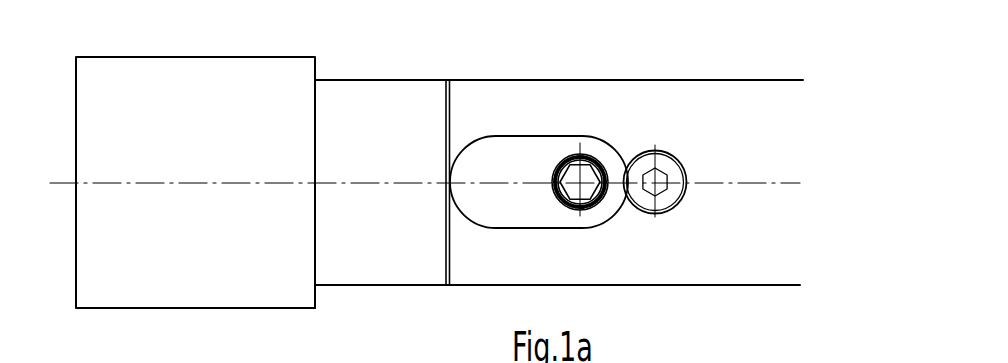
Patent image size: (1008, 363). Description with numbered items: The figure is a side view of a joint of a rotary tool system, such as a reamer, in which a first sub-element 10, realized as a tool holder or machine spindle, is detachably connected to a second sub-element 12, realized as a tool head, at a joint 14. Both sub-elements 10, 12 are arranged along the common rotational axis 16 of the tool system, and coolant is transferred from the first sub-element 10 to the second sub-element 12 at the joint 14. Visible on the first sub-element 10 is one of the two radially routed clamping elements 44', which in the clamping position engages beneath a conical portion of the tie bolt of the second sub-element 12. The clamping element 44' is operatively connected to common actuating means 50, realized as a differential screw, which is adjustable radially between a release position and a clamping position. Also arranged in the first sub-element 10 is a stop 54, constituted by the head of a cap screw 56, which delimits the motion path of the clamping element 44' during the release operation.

The first sub-element 10 is at (485, 105).
The second sub-element 12 is at (250, 87).
The joint 14 is at (318, 287).
The rotational axis 16 is at (70, 182).
The clamping element 44' is at (539, 125).
The actuating means 50 is at (590, 160).
The stop 54 is at (640, 167).
The cap screw 56 is at (672, 177).